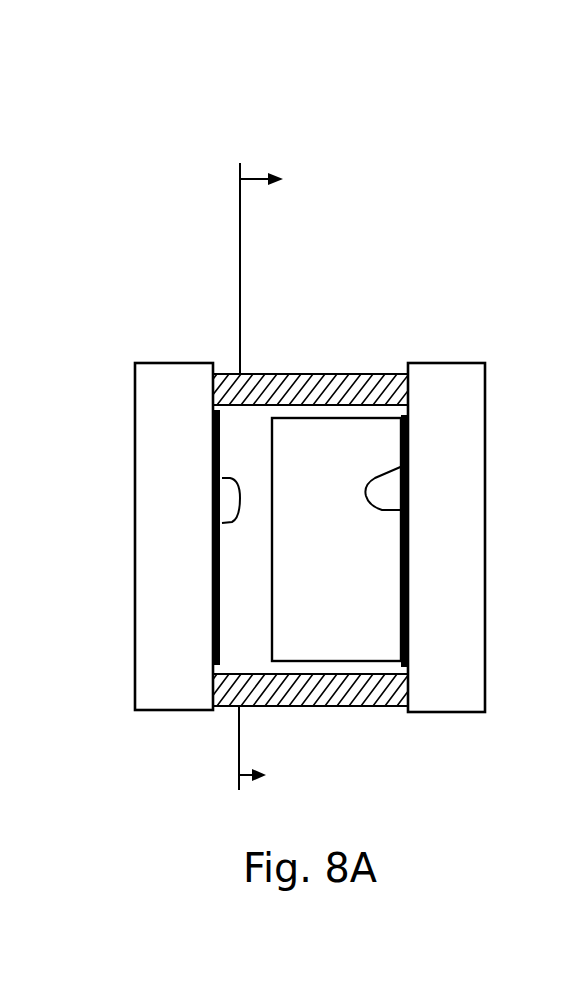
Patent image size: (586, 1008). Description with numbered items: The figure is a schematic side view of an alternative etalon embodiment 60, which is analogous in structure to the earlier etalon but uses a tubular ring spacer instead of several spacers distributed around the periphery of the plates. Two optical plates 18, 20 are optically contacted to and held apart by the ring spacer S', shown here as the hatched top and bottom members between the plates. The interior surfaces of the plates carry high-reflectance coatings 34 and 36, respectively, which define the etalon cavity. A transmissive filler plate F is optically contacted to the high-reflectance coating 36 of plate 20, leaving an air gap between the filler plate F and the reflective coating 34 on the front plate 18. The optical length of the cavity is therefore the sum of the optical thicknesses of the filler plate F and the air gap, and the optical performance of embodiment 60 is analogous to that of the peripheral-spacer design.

The alternative embodiment etalon 60 is at (386, 129).
The optical plate 18 is at (188, 372).
The optical plate 20 is at (463, 375).
The high-reflectance coating 34 is at (212, 518).
The high-reflectance coating 36 is at (405, 465).
The ring spacer S' is at (301, 457).
The transmissive filler plate F is at (377, 438).